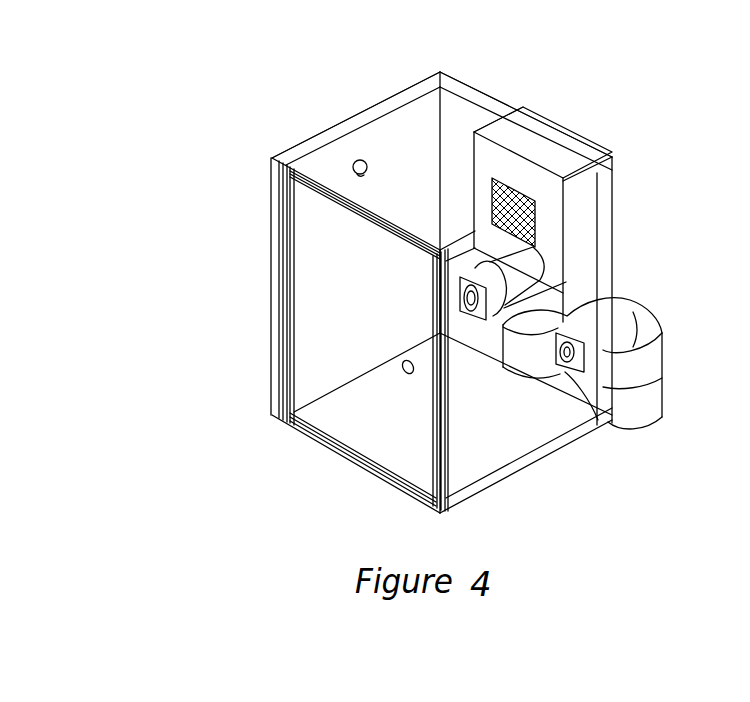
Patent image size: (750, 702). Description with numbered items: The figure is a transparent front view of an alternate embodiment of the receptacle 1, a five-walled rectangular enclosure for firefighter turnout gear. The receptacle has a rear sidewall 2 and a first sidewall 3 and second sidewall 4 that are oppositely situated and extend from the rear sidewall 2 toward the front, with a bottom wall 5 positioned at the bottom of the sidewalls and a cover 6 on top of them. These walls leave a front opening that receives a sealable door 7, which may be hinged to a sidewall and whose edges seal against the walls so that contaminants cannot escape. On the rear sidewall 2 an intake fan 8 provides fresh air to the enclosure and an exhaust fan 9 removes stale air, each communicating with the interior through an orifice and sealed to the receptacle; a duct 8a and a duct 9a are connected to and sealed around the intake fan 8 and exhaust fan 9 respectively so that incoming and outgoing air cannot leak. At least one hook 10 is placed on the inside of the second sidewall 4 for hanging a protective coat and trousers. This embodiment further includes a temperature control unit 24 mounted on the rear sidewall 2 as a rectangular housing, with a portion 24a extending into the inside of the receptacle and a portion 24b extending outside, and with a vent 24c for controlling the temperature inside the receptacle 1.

The receptacle 1 is at (577, 102).
The rear sidewall 2 is at (582, 294).
The first sidewall 3 is at (515, 433).
The second sidewall 4 is at (403, 133).
The bottom wall 5 is at (280, 428).
The cover 6 is at (450, 110).
The sealable door 7 is at (412, 374).
The intake fan 8 is at (457, 283).
The intake duct 8a is at (563, 267).
The exhaust fan 9 is at (622, 425).
The exhaust duct 9a is at (655, 358).
The hook 10 is at (350, 163).
The temperature control unit 24 is at (614, 147).
The inside portion of temperature control unit 24a is at (577, 213).
The outside portion of temperature control unit 24b is at (528, 109).
The vent 24c is at (505, 193).